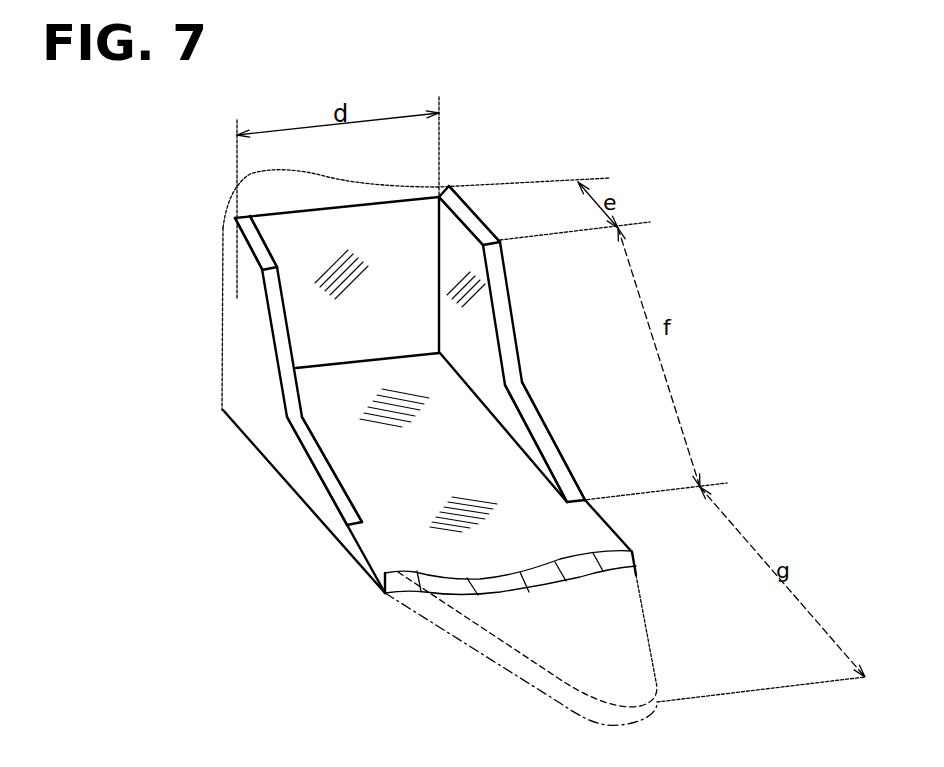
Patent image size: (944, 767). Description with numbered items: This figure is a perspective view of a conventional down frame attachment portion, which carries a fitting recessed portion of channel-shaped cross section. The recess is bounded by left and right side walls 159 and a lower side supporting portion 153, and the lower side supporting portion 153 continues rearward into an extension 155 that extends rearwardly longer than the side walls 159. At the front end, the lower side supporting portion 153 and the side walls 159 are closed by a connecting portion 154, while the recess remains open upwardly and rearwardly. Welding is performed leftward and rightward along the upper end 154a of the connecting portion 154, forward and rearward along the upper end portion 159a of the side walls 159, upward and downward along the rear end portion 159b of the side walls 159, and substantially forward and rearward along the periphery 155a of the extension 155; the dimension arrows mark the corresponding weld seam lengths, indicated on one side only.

The lower side supporting portion 153 is at (377, 493).
The connecting portion 154 is at (275, 228).
The upper end of the connecting portion 154a is at (362, 197).
The extension 155 is at (548, 622).
The periphery of the extension 155a is at (445, 632).
The side walls 159 is at (237, 363).
The upper end portion of the side walls 159a is at (247, 255).
The rear end portion of the side walls 159b is at (313, 455).